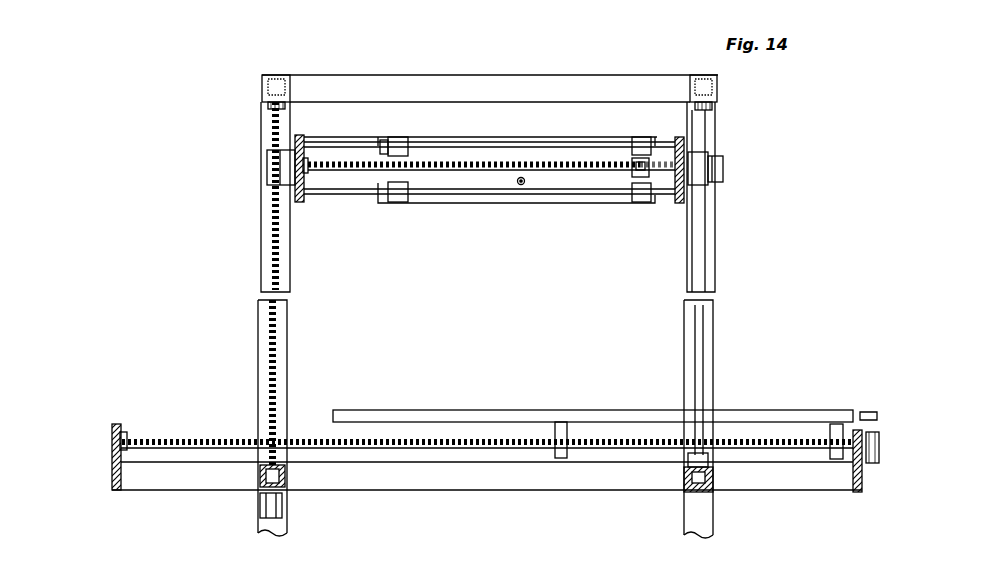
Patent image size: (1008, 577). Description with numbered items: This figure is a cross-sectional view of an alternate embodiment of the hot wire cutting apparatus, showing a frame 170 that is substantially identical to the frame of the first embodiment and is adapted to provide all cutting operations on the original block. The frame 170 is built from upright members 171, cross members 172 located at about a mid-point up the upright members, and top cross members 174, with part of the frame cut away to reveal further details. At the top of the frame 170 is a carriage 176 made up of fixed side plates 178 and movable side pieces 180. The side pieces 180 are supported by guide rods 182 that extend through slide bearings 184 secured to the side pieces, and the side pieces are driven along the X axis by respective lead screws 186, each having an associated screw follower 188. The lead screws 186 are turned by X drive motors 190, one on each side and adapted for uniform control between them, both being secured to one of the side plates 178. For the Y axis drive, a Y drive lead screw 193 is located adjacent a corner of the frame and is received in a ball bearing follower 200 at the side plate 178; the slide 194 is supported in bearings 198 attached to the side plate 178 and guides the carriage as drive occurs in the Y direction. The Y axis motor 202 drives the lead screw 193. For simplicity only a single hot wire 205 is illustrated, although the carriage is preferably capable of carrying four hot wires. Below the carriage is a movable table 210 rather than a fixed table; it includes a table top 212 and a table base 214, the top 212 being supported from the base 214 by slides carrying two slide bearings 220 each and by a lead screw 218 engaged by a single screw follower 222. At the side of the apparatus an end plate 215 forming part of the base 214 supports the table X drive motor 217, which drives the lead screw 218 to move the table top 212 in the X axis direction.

The frame 170 is at (258, 321).
The upright members 171 is at (262, 270).
The cross members 172 is at (258, 476).
The top cross members 174 is at (276, 73).
The carriage 176 is at (464, 137).
The fixed side plates 178 is at (298, 203).
The movable side pieces 180 is at (570, 136).
The guide rods 182 is at (338, 192).
The slide bearings 184 is at (388, 188).
The lead screws 186 is at (434, 160).
The screw follower 188 is at (652, 200).
The X drive motors 190 is at (725, 168).
The Y drive screw 193 is at (272, 226).
The slide 194 is at (712, 238).
The bearings 198 is at (705, 158).
The ball bearing follower 200 is at (266, 168).
The Y axis motor 202 is at (284, 507).
The hot wire 205 is at (520, 185).
The movable table 210 is at (782, 410).
The table top 212 is at (440, 410).
The table base 214 is at (496, 490).
The end plate 215 is at (852, 478).
The table X drive motor 217 is at (868, 410).
The lead screw 218 is at (744, 443).
The slide bearings 220 is at (566, 425).
The screw follower 222 is at (830, 424).